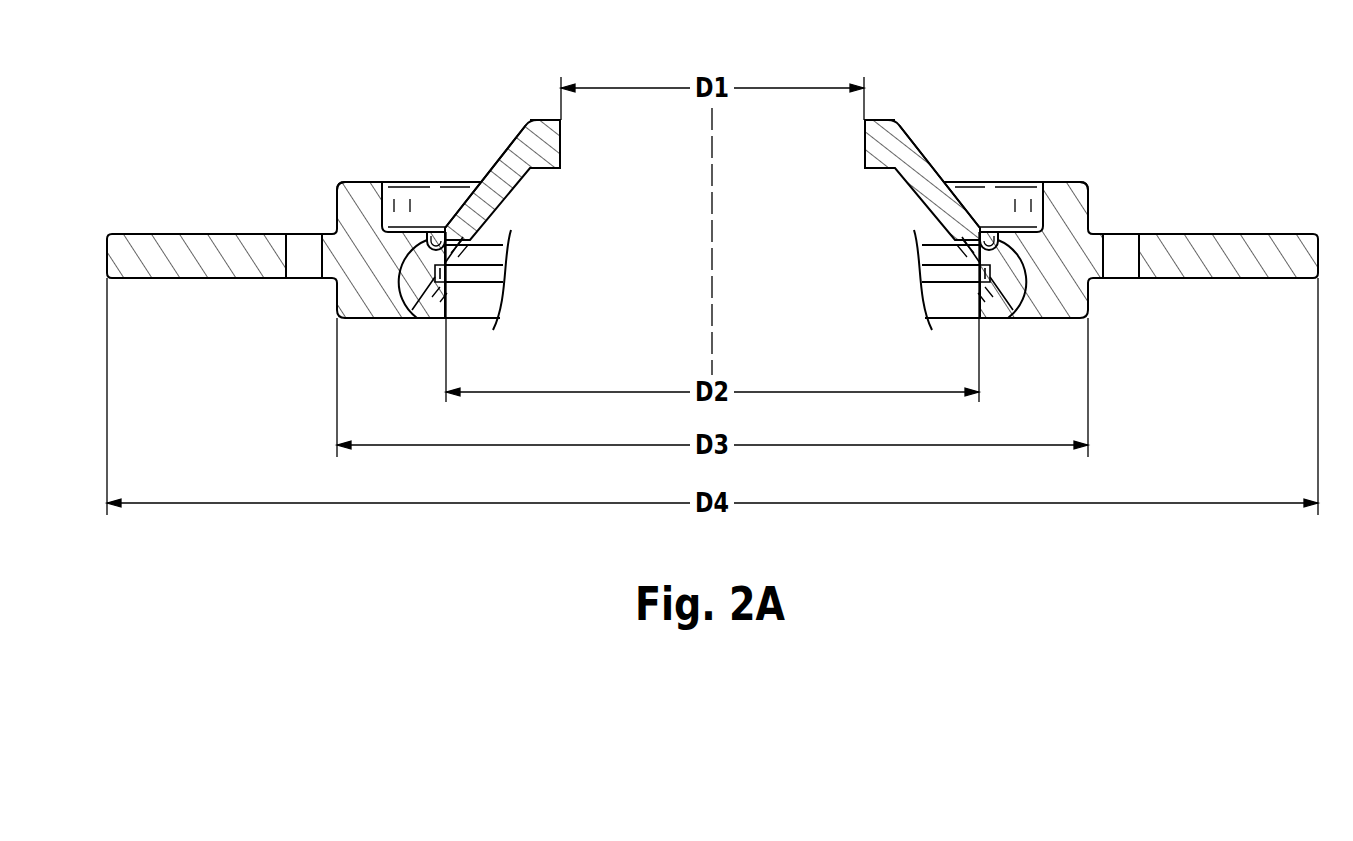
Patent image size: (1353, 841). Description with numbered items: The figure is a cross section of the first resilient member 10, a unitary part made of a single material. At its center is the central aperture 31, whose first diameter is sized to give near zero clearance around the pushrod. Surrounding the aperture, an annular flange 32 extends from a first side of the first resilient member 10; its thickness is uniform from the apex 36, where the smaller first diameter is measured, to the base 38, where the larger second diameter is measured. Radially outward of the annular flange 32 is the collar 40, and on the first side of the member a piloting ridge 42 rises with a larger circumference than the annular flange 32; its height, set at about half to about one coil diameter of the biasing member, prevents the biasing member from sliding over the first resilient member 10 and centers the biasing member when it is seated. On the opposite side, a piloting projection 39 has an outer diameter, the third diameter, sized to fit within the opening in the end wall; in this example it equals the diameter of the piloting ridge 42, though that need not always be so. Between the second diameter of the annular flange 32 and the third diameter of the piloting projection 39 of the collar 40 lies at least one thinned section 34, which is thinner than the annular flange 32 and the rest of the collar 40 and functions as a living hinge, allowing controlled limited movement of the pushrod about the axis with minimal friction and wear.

The first resilient member 10 is at (932, 102).
The central aperture 31 is at (602, 128).
The annular flange 32 is at (922, 162).
The thinned section 34 is at (403, 307).
The apex 36 is at (882, 118).
The base 38 is at (983, 220).
The piloting projection 39 is at (357, 313).
The collar 40 is at (197, 280).
The piloting ridge 42 is at (338, 196).